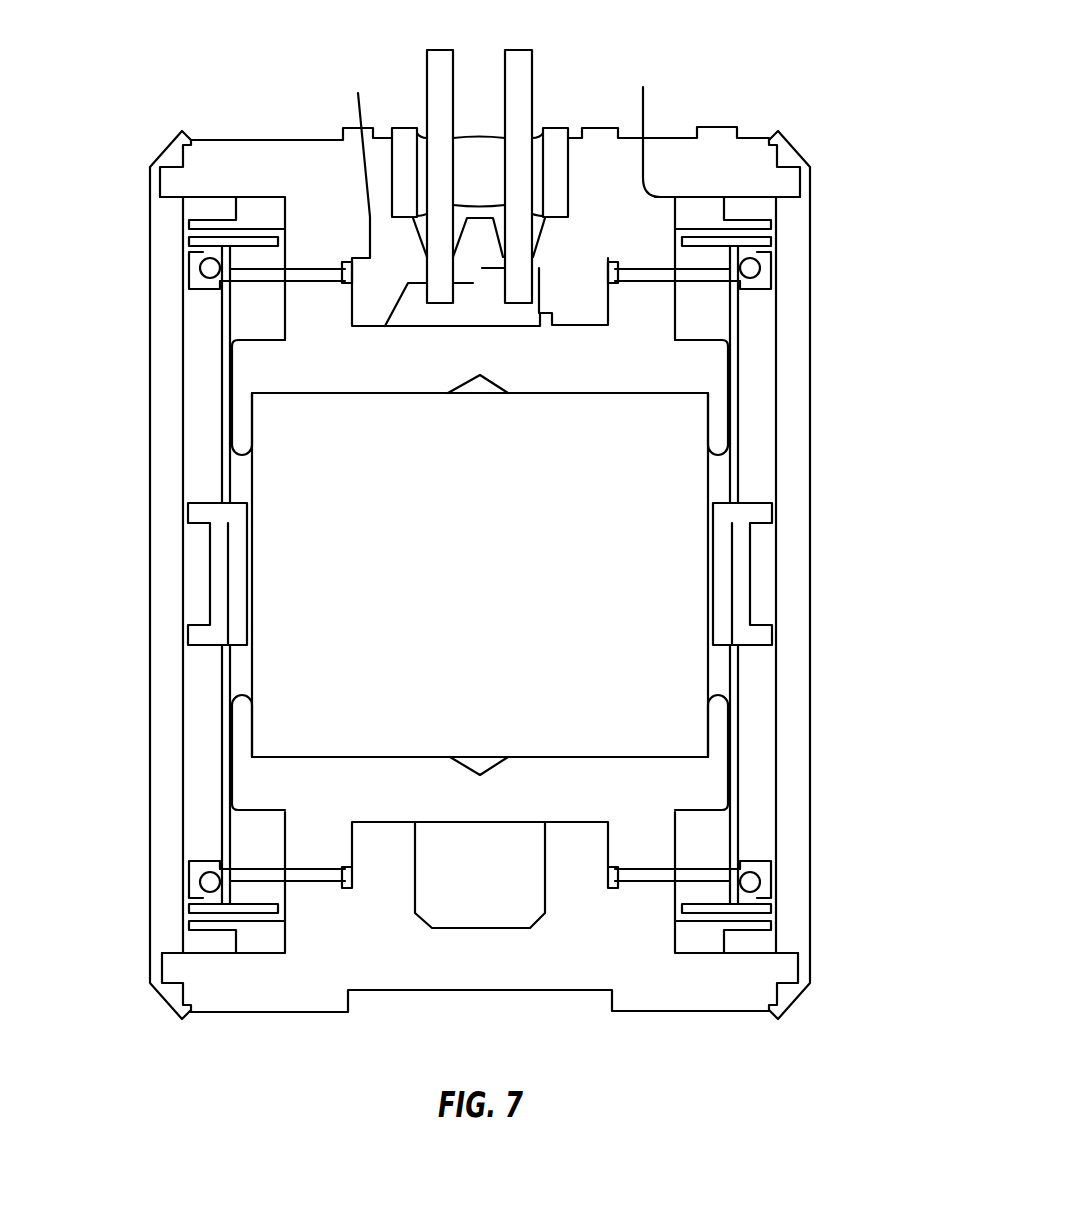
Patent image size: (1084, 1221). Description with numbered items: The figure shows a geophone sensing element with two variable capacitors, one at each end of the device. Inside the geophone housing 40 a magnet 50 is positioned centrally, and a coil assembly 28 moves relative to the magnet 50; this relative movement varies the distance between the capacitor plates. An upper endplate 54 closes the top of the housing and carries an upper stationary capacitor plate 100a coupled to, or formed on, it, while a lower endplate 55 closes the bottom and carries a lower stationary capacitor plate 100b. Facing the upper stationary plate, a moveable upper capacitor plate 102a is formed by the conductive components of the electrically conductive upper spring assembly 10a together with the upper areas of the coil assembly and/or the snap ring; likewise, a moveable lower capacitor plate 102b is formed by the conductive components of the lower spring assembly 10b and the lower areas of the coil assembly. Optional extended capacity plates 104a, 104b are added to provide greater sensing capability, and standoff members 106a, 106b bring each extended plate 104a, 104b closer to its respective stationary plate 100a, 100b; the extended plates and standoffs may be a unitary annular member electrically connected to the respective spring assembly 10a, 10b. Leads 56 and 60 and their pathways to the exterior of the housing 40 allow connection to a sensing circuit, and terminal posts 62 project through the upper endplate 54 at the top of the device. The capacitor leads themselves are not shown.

The upper spring assembly 10a is at (714, 279).
The lower spring assembly 10b is at (714, 871).
The coil assembly 28 is at (753, 573).
The geophone housing 40 is at (813, 412).
The magnet 50 is at (498, 589).
The upper endplate 54 is at (744, 148).
The lower endplate 55 is at (745, 997).
The lead 56 is at (648, 105).
The lead 60 is at (357, 110).
The terminal pins 62 is at (453, 72).
The upper stationary capacitor plate 100a is at (771, 223).
The lower stationary capacitor plate 100b is at (771, 925).
The moveable upper capacitor plate 102a is at (172, 265).
The moveable lower capacitor plate 102b is at (172, 885).
The extended capacity plate 104a is at (771, 242).
The extended capacity plate 104b is at (771, 907).
The standoff member 106a is at (228, 256).
The standoff member 106b is at (228, 894).